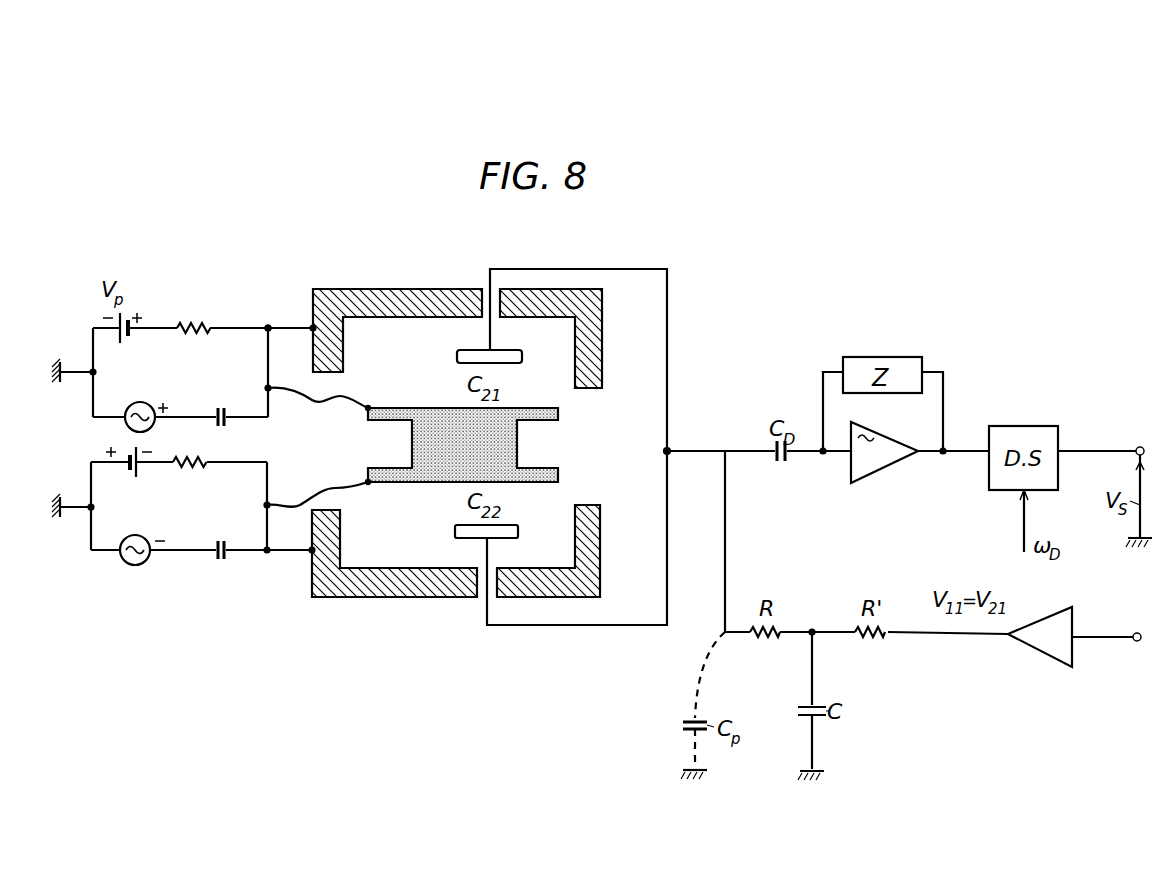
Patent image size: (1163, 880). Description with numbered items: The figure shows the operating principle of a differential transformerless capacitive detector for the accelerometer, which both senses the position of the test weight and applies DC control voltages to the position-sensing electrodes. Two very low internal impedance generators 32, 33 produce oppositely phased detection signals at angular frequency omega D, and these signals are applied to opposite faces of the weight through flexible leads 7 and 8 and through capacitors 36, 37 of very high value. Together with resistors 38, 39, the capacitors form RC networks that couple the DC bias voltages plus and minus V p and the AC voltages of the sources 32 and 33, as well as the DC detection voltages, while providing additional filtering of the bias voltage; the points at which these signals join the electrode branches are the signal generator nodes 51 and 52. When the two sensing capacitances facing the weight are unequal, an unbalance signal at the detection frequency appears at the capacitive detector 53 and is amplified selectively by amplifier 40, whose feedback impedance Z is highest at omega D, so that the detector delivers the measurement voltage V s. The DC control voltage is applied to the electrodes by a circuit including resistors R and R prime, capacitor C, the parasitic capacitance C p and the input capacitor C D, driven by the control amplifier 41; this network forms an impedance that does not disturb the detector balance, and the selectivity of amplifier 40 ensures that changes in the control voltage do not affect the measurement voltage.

The flexible lead 7 is at (312, 400).
The flexible lead 8 is at (312, 497).
The very low internal impedance generator 32 is at (140, 402).
The very low internal impedance generator 33 is at (135, 535).
The capacitor 36 is at (226, 420).
The capacitor 37 is at (226, 554).
The resistor 38 is at (193, 320).
The resistor 39 is at (188, 456).
The amplifier 40 is at (875, 470).
The control amplifier 41 is at (1046, 655).
The signal generator 51 is at (264, 547).
The signal generator 52 is at (268, 326).
The capacitive detector 53 is at (669, 448).